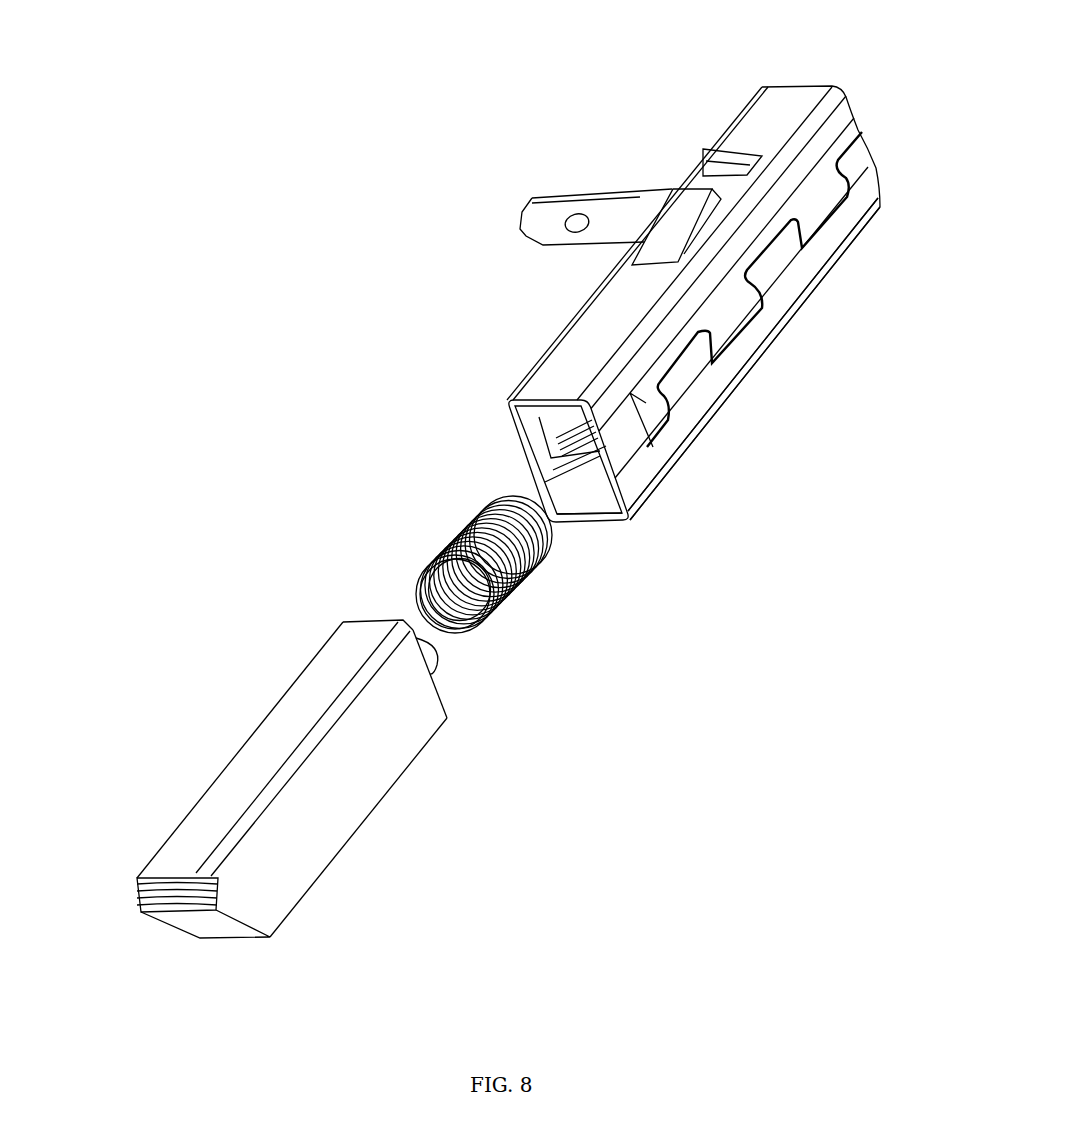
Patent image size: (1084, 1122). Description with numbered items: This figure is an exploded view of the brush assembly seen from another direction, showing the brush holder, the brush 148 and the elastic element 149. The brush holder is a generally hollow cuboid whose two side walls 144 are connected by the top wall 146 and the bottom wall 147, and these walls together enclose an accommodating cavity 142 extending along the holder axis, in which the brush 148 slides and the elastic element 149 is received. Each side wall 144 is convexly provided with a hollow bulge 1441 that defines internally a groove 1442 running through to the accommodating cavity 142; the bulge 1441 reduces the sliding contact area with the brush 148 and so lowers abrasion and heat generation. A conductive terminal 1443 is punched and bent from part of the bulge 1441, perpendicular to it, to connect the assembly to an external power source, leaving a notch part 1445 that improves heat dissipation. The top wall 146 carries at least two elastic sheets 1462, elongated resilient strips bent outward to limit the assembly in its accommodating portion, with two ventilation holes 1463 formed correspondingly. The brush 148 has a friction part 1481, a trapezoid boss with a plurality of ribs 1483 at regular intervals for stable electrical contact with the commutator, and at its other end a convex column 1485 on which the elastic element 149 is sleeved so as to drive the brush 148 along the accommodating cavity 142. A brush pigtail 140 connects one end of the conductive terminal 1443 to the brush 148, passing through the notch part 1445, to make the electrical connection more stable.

The brush pigtail 140 is at (245, 468).
The accommodating cavity 142 is at (597, 497).
The side walls 144 is at (525, 450).
The hollow bulge 1441 is at (862, 158).
The groove 1442 is at (650, 447).
The conductive terminal 1443 is at (544, 222).
The notch part 1445 is at (553, 424).
The top wall 146 is at (780, 63).
The elastic sheets 1462 is at (673, 188).
The ventilation holes 1463 is at (737, 163).
The bottom wall 147 is at (581, 520).
The brush 148 is at (167, 948).
The friction part 1481 is at (288, 878).
The ribs 1483 is at (162, 890).
The convex column 1485 is at (437, 660).
The elastic element 149 is at (455, 537).